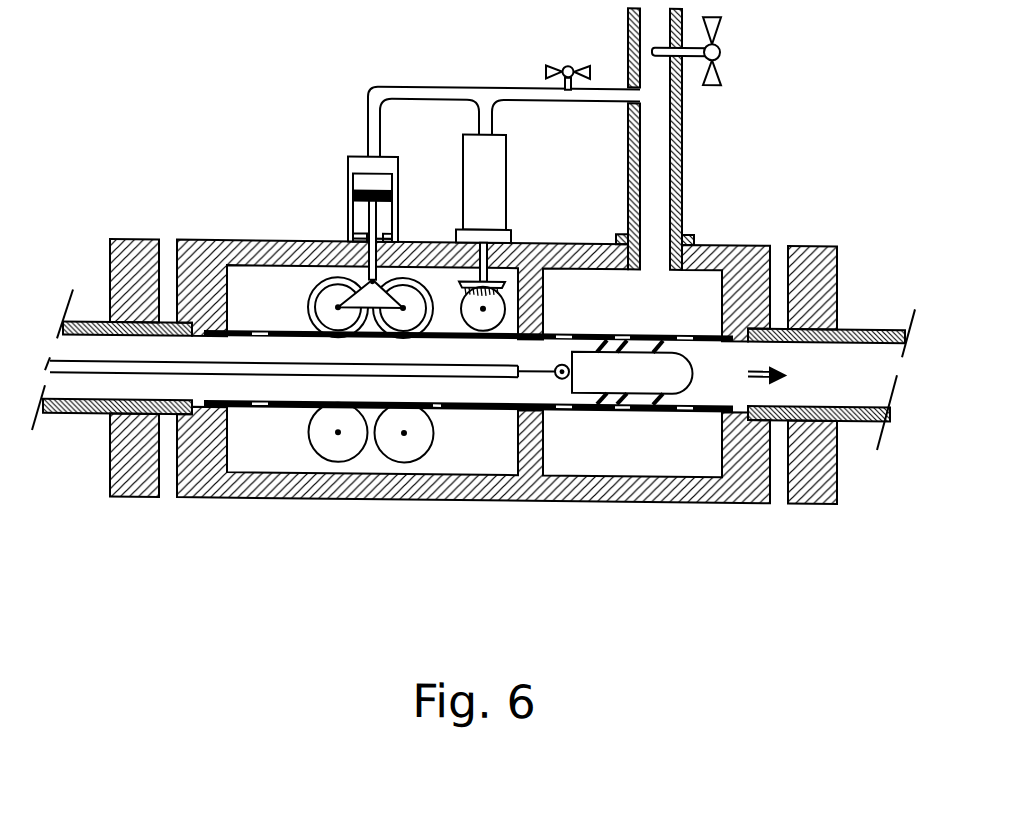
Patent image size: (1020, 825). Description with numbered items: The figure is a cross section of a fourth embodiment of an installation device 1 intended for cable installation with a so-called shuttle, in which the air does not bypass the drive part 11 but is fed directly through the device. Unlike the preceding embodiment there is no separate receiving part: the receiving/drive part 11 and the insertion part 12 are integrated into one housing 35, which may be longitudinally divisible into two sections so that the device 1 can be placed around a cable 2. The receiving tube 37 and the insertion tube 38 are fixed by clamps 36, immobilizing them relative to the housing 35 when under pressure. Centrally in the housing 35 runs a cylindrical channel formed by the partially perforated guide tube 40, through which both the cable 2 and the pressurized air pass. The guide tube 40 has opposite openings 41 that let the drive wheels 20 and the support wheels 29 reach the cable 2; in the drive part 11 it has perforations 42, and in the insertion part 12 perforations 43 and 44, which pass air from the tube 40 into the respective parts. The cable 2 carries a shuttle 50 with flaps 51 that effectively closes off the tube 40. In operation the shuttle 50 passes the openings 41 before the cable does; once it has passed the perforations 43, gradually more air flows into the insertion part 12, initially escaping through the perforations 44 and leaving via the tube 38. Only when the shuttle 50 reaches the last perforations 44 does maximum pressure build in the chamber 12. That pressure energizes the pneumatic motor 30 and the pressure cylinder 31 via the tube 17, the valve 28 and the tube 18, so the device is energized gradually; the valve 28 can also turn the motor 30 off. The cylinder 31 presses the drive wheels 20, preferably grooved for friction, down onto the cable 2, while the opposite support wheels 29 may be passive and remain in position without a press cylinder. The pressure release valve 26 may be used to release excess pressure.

The installation device 1 is at (822, 76).
The cable 2 is at (89, 368).
The drive part 11 is at (293, 462).
The insertion part 12 is at (705, 281).
The tube 17 is at (682, 143).
The tube 18 is at (429, 88).
The drive wheels 20 is at (322, 280).
The pressure release valve 26 is at (720, 22).
The valve 28 is at (587, 64).
The support wheels 29 is at (338, 434).
The pneumatic motor 30 is at (506, 172).
The pressure cylinder 31 is at (398, 171).
The housing 35 is at (203, 243).
The clamps 36 is at (133, 500).
The receiving tube 37 is at (71, 418).
The insertion tube 38 is at (863, 418).
The guide tube 40 is at (473, 410).
The openings 41 is at (371, 404).
The perforations 42 is at (257, 410).
The perforations 43 is at (563, 410).
The perforations 44 is at (683, 410).
The shuttle 50 is at (643, 371).
The flaps 51 is at (603, 410).